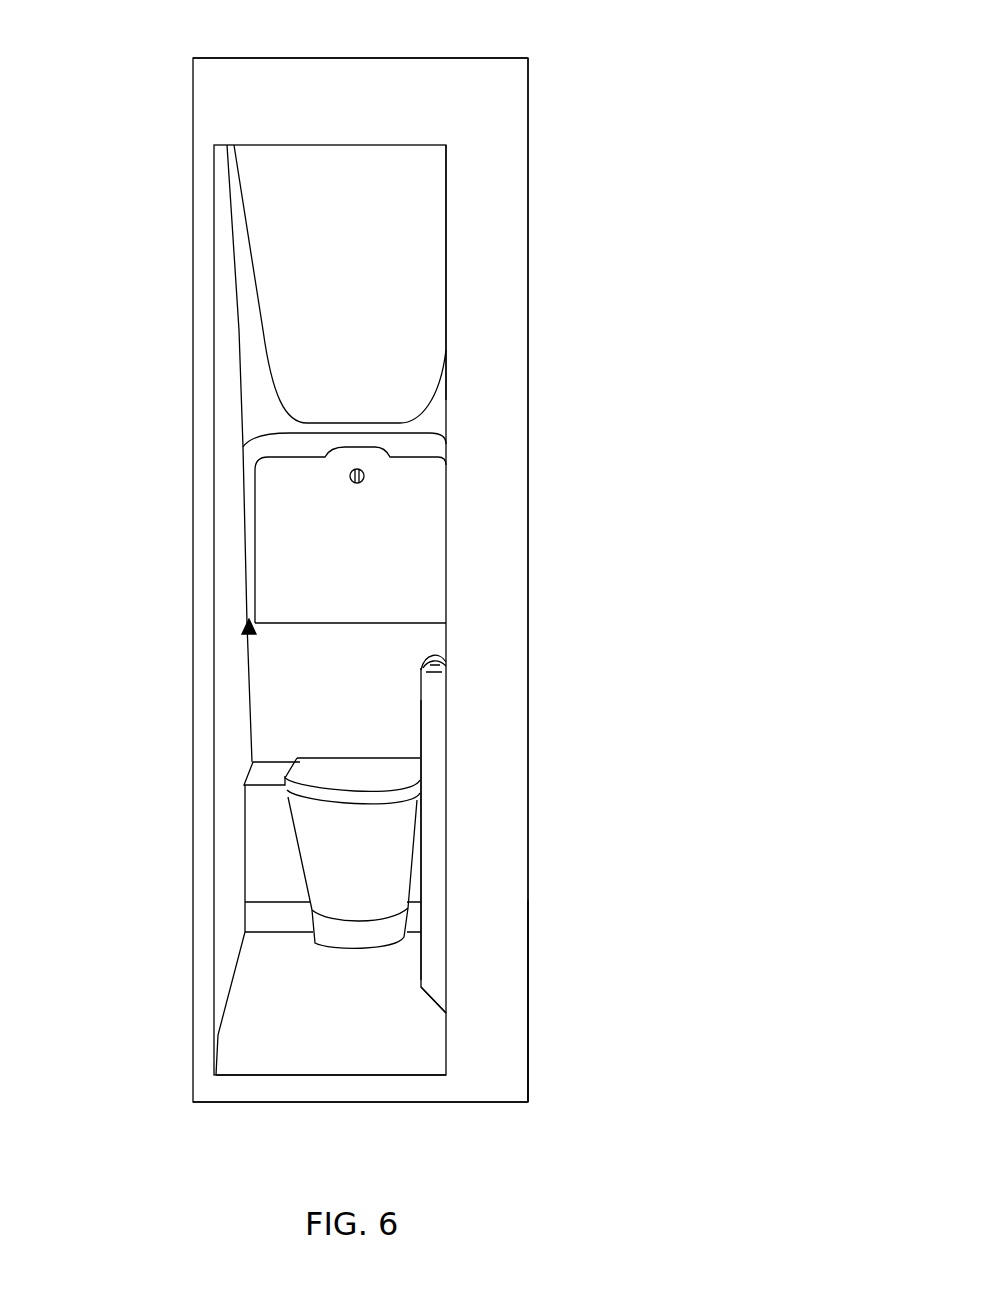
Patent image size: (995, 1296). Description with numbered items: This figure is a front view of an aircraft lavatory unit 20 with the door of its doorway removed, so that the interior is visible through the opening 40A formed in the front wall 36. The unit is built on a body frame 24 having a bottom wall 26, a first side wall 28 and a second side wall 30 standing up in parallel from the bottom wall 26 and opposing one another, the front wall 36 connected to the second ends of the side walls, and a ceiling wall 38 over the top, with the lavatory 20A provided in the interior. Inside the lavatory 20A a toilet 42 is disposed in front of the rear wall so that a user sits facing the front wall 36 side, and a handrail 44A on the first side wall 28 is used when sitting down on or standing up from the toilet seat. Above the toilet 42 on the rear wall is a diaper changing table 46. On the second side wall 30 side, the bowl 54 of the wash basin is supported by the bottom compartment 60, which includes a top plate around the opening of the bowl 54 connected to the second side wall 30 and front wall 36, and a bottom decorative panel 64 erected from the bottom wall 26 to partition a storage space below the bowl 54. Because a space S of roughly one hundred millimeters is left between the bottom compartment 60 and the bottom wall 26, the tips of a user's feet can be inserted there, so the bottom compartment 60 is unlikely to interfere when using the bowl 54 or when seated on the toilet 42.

The aircraft lavatory unit 20 is at (428, 556).
The lavatory 20A is at (267, 415).
The body frame 24 is at (528, 1062).
The bottom wall 26 is at (343, 1050).
The first side wall 28 is at (193, 492).
The second side wall 30 is at (528, 495).
The front wall 36 is at (503, 272).
The ceiling wall 38 is at (393, 57).
The opening 40A is at (446, 200).
The toilet 42 is at (323, 772).
The handrail 44A is at (242, 624).
The diaper changing table 46 is at (283, 538).
The bowl 54 is at (447, 648).
The bottom compartment 60 is at (437, 723).
The bottom decorative panel 64 is at (437, 803).
The space S is at (437, 1013).